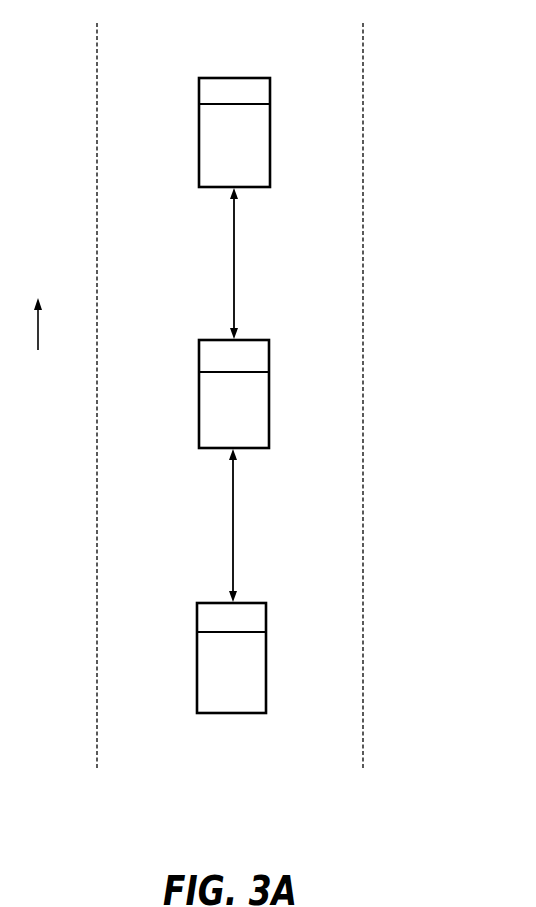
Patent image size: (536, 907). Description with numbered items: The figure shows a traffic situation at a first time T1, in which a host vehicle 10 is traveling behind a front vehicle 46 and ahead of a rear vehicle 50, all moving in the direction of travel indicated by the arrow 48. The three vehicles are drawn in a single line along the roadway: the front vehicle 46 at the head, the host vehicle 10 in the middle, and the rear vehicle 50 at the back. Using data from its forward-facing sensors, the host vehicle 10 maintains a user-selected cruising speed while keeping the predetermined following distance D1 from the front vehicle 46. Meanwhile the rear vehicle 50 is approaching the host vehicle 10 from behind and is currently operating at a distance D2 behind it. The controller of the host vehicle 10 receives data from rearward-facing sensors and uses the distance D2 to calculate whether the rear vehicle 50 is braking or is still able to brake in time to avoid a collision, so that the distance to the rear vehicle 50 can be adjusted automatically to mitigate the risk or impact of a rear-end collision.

The vehicle 10 is at (267, 405).
The front vehicle 46 is at (268, 138).
The rear vehicle 50 is at (266, 670).
The arrow 48 is at (37, 342).
The predetermined following distance D1 is at (236, 275).
The distance D2 is at (235, 528).
The first time T1 is at (230, 416).